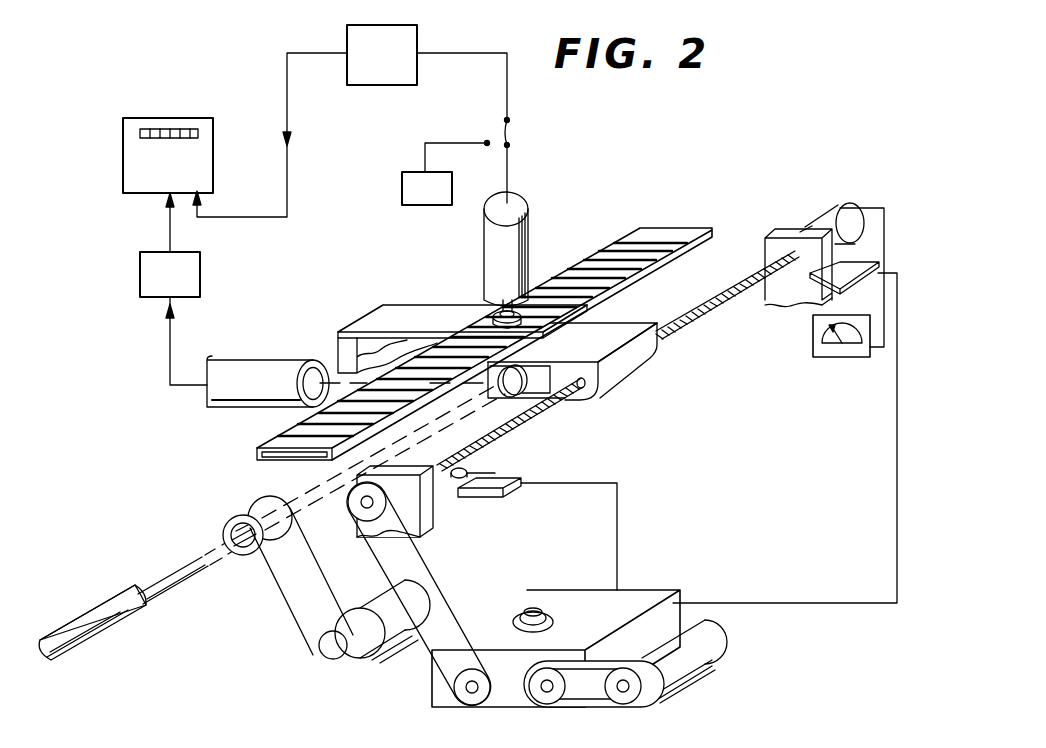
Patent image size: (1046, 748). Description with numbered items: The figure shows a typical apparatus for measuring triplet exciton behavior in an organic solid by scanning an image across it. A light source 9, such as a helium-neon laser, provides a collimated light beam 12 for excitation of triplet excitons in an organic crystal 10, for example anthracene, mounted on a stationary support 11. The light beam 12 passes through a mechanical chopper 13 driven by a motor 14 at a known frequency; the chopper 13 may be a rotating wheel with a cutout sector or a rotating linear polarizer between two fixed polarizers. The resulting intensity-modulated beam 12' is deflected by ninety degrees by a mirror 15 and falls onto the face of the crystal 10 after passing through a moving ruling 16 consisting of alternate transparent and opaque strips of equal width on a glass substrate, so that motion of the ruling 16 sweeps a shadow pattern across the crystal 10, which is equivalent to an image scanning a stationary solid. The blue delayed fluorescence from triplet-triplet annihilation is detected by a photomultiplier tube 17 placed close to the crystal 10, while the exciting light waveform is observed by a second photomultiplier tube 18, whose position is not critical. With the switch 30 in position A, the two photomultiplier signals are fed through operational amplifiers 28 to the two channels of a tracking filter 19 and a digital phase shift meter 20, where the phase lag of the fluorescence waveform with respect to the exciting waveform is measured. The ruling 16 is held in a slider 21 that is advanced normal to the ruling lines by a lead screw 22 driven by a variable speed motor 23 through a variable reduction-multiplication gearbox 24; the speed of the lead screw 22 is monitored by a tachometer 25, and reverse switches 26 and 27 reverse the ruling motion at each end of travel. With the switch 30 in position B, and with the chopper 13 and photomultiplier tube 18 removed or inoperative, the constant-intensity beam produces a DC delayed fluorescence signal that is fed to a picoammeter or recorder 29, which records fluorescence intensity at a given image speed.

The light source 9 is at (100, 632).
The organic crystal 10 is at (495, 316).
The stationary support 11 is at (427, 330).
The light beam 12 is at (188, 578).
The intensity-modulated beam 12' is at (383, 461).
The mechanical chopper 13 is at (228, 525).
The motor 14 is at (380, 650).
The mirror 15 is at (540, 402).
The moving ruling 16 is at (672, 232).
The photomultiplier tube 17 is at (495, 257).
The photomultiplier tube 18 is at (249, 393).
The tracking filter 19 is at (177, 165).
The digital phase shift meter 20 is at (198, 133).
The slider 21 is at (589, 351).
The lead screw 22 is at (683, 325).
The variable speed motor 23 is at (690, 672).
The variable reduction-multiplication gearbox 24 is at (589, 629).
The tachometer 25 is at (836, 357).
The reverse switch 26 is at (487, 490).
The reverse switch 27 is at (855, 262).
The operational amplifier 28 is at (393, 65).
The picoammeter or recorder 29 is at (438, 198).
The switch 30 is at (515, 149).